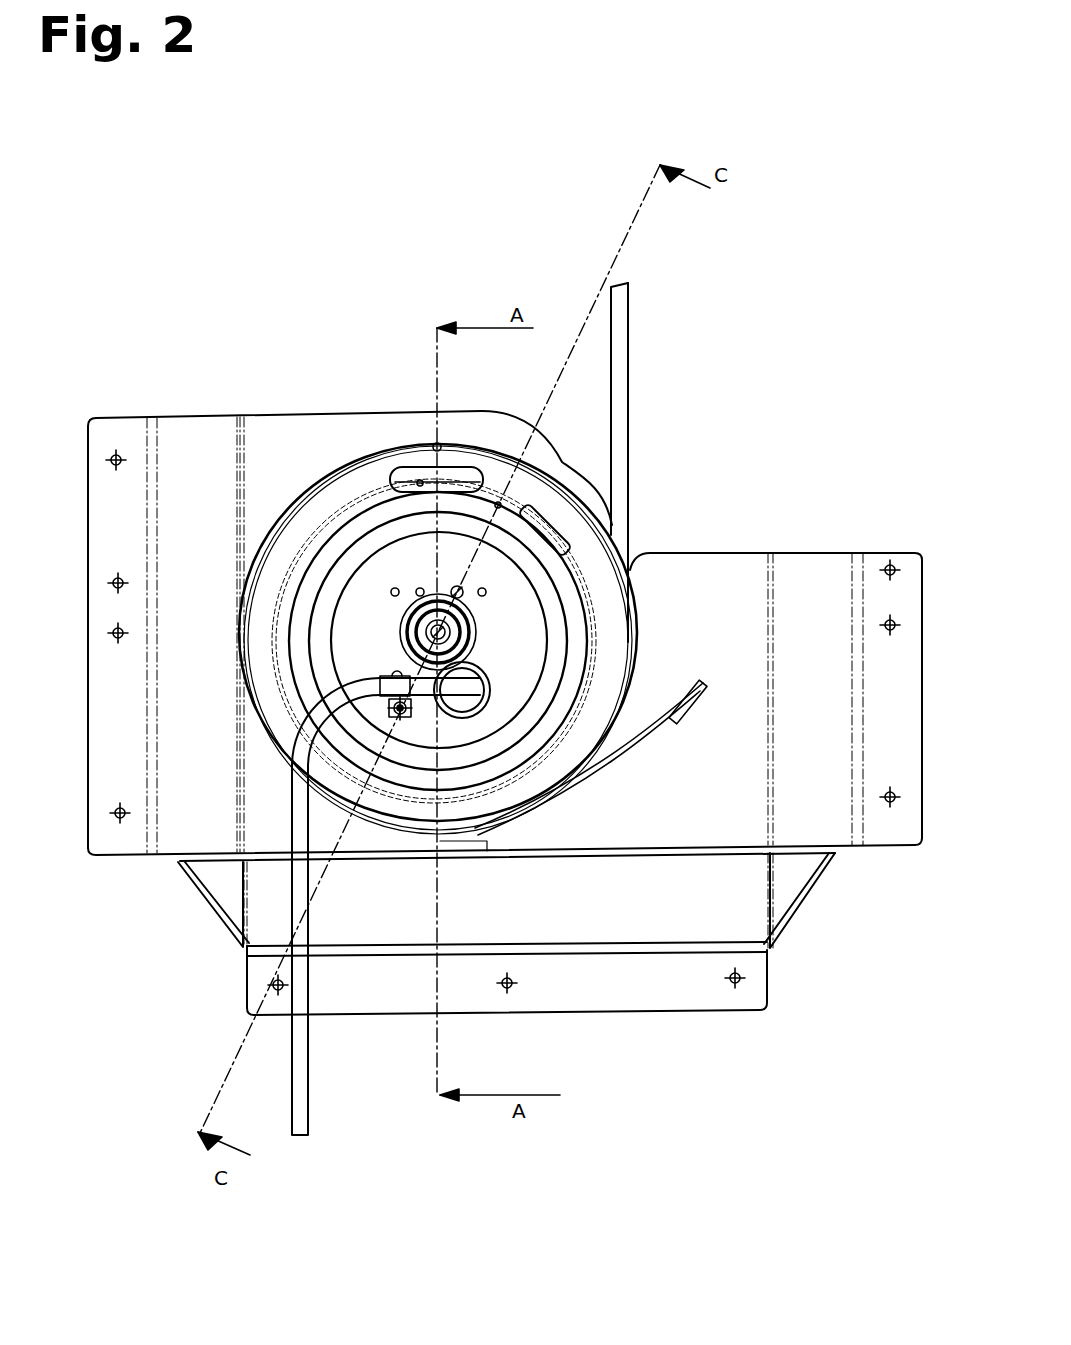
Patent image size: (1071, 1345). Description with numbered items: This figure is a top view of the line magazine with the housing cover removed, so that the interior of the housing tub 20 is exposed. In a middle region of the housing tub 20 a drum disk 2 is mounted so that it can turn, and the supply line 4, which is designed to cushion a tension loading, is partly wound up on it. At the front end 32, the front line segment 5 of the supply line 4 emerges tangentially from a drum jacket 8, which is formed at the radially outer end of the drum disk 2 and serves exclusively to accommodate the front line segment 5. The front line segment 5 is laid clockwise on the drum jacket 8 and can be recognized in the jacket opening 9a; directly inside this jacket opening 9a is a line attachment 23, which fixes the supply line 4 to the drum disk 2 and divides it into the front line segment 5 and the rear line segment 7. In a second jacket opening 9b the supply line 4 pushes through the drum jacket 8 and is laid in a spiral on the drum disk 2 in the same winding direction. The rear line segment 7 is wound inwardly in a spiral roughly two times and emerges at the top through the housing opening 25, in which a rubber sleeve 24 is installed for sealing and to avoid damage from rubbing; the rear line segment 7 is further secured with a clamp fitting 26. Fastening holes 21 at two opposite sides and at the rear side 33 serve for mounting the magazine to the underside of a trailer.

The drum disk 2 is at (367, 607).
The front end 32 is at (236, 406).
The drum jacket 8 is at (368, 480).
The jacket opening 9a is at (387, 478).
The line attachment 23 is at (420, 478).
The second jacket opening 9b is at (517, 505).
The supply line 4 is at (676, 373).
The front line segment 5 is at (628, 462).
The housing tub 20 is at (743, 575).
The rear line segment 7 is at (563, 578).
The clamp fitting 26 is at (400, 716).
The housing opening 25 is at (458, 707).
The fastening holes 21 is at (118, 640).
The rubber sleeve 24 is at (540, 717).
The rear side 33 is at (637, 1016).